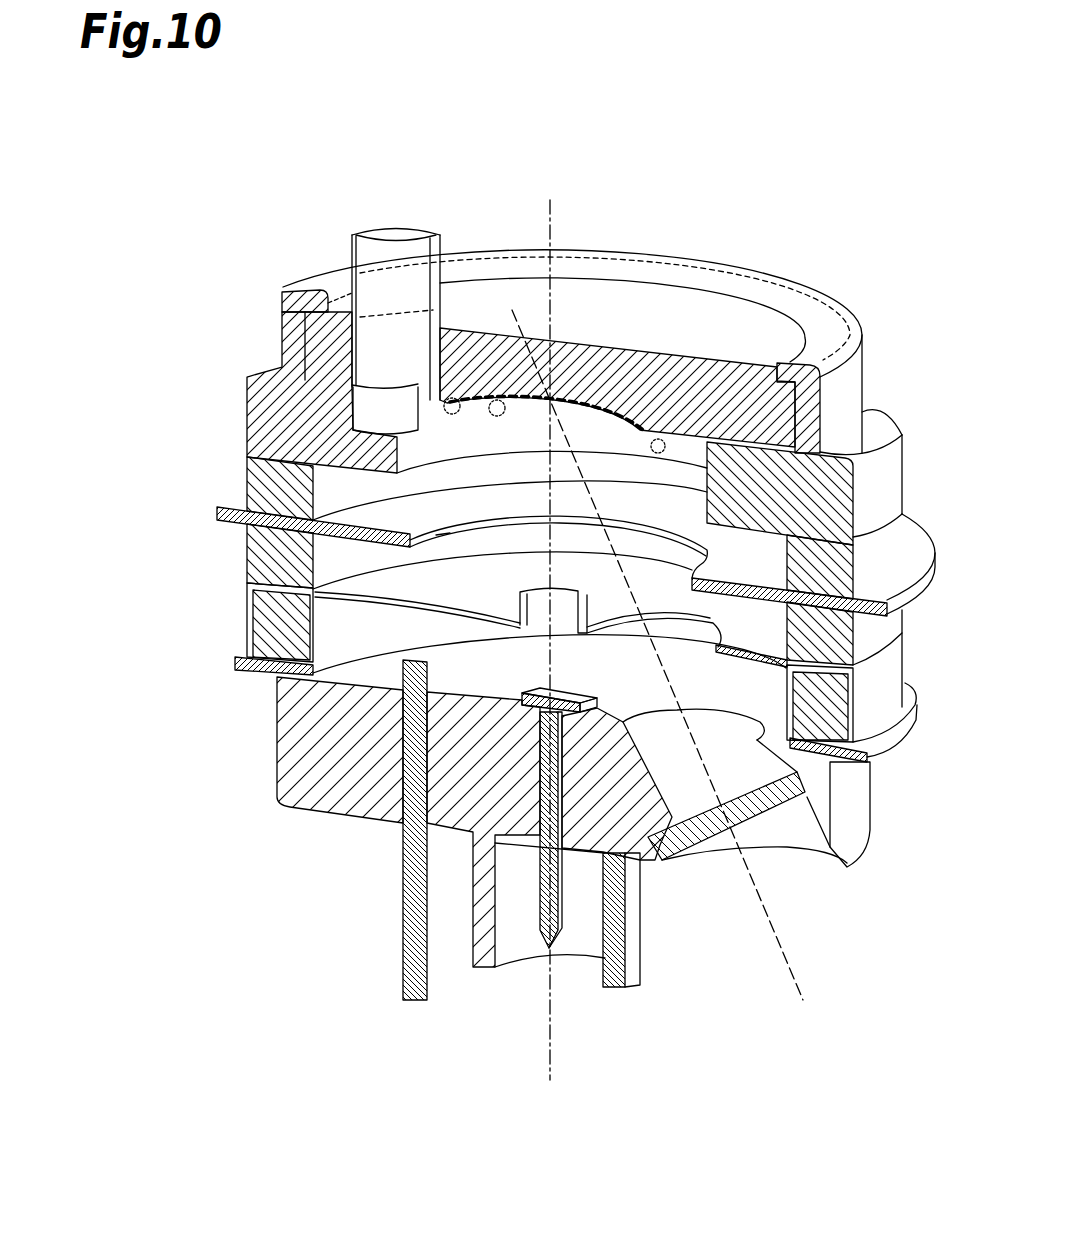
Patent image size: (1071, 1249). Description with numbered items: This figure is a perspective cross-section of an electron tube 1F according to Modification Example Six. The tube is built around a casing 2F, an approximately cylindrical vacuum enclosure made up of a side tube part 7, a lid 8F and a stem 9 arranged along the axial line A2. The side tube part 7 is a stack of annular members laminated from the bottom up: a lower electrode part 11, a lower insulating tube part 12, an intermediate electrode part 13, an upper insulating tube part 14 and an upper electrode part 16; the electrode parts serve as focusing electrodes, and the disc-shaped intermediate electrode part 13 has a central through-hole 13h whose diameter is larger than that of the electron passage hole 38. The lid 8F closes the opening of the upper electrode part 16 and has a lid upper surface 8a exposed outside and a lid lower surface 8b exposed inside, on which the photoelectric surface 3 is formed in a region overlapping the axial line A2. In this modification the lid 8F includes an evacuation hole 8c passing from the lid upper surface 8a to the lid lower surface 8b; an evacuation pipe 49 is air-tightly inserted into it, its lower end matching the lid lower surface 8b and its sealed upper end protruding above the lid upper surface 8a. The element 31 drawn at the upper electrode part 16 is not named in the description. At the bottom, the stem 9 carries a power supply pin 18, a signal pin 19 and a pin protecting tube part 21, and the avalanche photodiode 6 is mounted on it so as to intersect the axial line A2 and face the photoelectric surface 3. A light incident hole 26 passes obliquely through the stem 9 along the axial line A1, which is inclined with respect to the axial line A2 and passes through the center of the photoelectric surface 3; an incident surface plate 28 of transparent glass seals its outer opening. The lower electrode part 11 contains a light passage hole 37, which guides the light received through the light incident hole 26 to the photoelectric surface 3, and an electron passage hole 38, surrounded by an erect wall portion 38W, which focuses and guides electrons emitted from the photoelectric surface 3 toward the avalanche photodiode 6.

The electron tube 1F is at (824, 162).
The housing assembly 2F is at (485, 459).
The lid 8F is at (762, 338).
The lid upper surface 8a is at (595, 295).
The lid lower surface 8b is at (658, 438).
The evacuation hole 8c is at (452, 396).
The photoelectric surface 3 is at (497, 400).
The evacuation pipe 49 is at (390, 228).
The protrusion 31 is at (282, 297).
The upper electrode part 16 is at (247, 406).
The upper insulating tube part 14 is at (247, 483).
The intermediate electrode part 13 is at (217, 513).
The through-hole 13h is at (443, 533).
The lower insulating tube part 12 is at (247, 555).
The lower electrode part 11 is at (247, 613).
The side tube part 7 is at (120, 395).
The stem 9 is at (277, 725).
The electron passage hole 38 is at (514, 607).
The wall portion 38W is at (560, 613).
The light passage hole 37 is at (680, 622).
The light incident hole 26 is at (738, 728).
The incident surface plate 28 is at (790, 840).
The avalanche photodiode 6 is at (483, 690).
The power supply pin 18 is at (403, 886).
The signal pin 19 is at (535, 930).
The pin protecting tube part 21 is at (640, 910).
The axial line A1 is at (786, 955).
The axial line A2 is at (548, 1062).